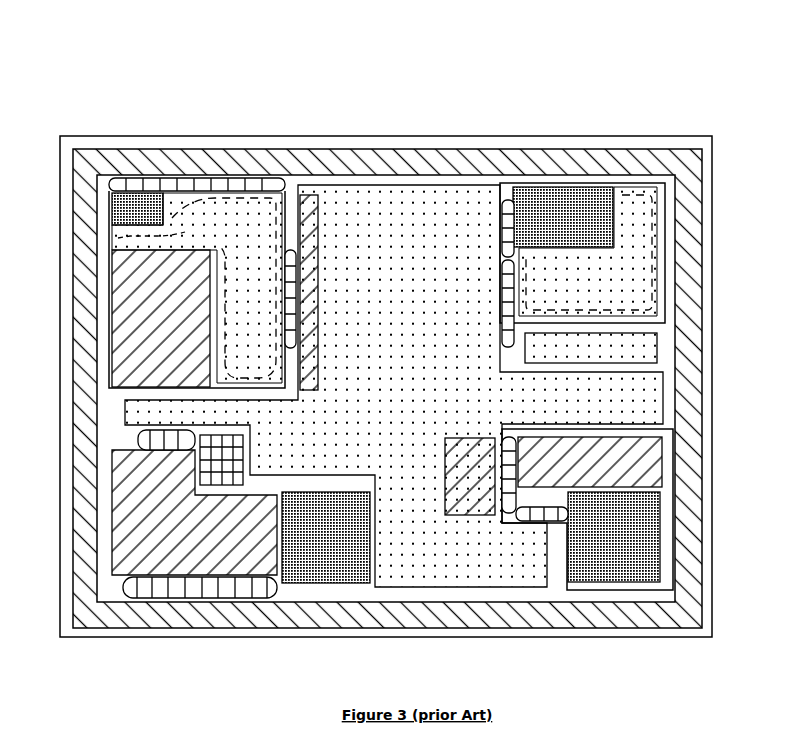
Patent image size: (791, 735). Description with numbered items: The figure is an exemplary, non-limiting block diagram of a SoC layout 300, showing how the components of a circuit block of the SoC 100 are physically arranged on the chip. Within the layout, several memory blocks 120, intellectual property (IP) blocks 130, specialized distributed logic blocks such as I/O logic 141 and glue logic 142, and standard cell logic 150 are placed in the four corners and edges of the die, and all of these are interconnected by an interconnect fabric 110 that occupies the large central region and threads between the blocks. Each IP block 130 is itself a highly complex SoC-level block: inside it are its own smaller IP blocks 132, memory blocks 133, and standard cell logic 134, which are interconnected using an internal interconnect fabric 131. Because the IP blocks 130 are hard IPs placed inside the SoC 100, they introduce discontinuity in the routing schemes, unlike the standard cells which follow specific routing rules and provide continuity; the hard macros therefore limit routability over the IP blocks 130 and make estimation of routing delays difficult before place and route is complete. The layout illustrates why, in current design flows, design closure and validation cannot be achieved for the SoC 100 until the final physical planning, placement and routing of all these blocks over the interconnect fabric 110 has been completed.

The SoC layout 300 is at (553, 50).
The SoC 100 is at (385, 136).
The interconnect fabric 110 is at (628, 385).
The memory block 120 is at (320, 400).
The IP block 130 is at (200, 195).
The interconnect fabric 131 is at (170, 205).
The IP block 132 is at (115, 210).
The memory block 133 is at (113, 363).
The standard cell logic 134 is at (267, 192).
The I/O logic 141 is at (112, 237).
The glue logic 142 is at (291, 250).
The standard cell logic 150 is at (637, 352).